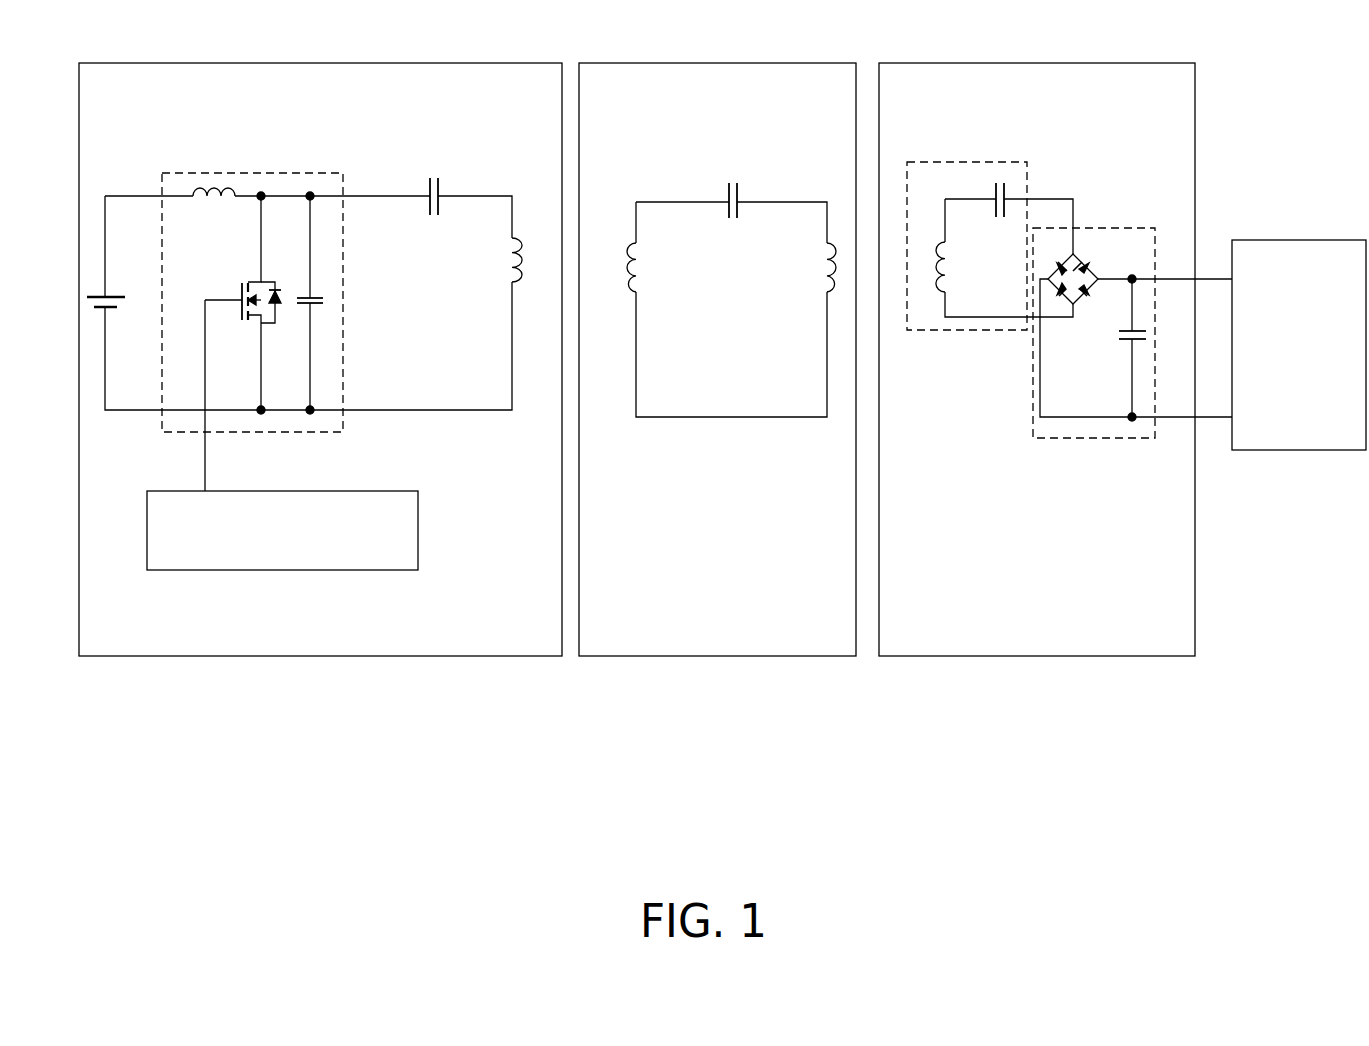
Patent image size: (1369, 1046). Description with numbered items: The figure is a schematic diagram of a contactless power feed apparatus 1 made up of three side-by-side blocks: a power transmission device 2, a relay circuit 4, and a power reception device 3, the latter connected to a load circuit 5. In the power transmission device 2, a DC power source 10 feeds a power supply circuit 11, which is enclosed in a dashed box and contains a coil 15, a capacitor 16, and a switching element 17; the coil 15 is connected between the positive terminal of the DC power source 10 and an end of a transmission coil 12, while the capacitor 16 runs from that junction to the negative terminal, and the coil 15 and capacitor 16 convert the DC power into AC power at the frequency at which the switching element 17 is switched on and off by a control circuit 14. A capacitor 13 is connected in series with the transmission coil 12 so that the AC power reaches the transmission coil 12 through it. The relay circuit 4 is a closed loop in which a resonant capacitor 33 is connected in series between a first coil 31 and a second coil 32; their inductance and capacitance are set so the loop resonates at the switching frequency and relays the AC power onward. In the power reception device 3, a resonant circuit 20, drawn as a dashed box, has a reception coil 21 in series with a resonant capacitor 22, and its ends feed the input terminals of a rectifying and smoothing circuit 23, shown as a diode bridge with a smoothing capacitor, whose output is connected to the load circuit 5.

The contactless power feed apparatus 1 is at (1175, 720).
The power transmission device 2 is at (427, 656).
The power reception device 3 is at (1052, 656).
The relay circuit 4 is at (768, 656).
The load circuit 5 is at (1305, 450).
The DC power source 10 is at (97, 292).
The power supply circuit 11 is at (305, 173).
The transmission coil 12 is at (522, 252).
The capacitor 13 is at (439, 180).
The control circuit 14 is at (297, 570).
The coil 15 is at (232, 188).
The capacitor 16 is at (320, 295).
The switching element 17 is at (246, 282).
The resonant circuit 20 is at (968, 333).
The reception coil 21 is at (940, 246).
The resonant capacitor 22 is at (1007, 190).
The rectifying and smoothing circuit 23 is at (1110, 228).
The first coil 31 is at (632, 243).
The second coil 32 is at (820, 278).
The resonant capacitor 33 is at (738, 185).